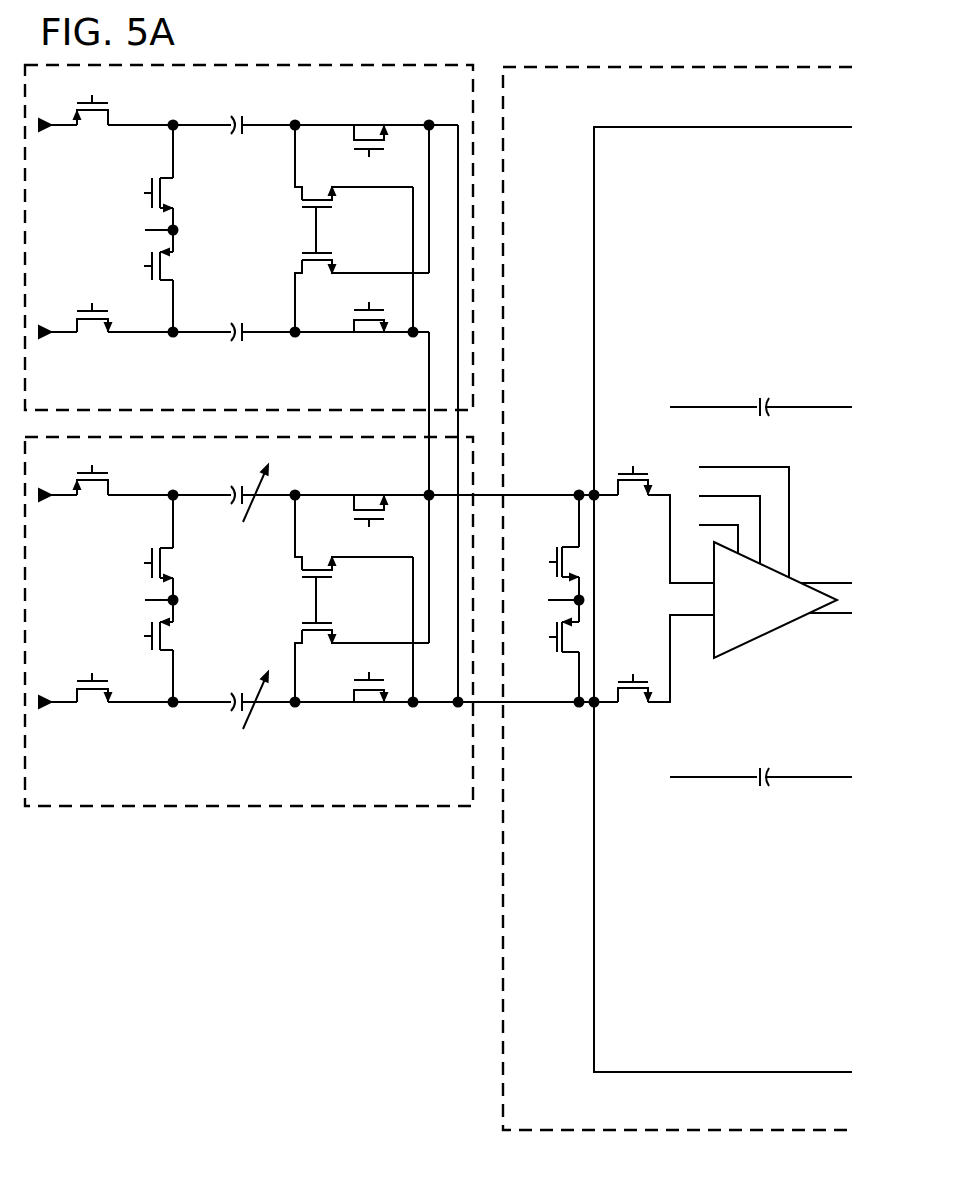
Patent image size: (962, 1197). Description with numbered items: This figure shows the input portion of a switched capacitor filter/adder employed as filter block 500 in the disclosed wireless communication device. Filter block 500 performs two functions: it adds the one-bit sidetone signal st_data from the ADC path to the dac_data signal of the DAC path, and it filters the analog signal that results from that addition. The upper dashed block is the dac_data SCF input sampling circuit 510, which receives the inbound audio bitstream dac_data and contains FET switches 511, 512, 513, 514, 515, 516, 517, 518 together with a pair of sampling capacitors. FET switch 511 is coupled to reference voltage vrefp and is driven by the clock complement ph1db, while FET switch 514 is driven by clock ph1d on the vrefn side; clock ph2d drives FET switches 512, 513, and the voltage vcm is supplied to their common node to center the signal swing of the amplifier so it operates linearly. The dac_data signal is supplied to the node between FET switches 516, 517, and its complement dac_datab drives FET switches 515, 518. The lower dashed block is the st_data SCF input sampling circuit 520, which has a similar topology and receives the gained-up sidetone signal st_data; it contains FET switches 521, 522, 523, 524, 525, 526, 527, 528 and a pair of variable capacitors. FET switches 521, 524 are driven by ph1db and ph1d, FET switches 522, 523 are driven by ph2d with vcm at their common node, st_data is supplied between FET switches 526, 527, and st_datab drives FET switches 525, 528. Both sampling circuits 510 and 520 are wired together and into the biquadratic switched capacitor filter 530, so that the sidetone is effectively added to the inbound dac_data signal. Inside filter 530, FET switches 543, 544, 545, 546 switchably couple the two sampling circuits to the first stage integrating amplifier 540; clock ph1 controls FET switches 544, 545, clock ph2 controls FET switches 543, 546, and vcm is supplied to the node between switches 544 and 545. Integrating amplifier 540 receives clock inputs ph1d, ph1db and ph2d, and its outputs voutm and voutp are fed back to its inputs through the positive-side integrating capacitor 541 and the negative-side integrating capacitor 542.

The filter block 500 is at (438, 575).
The dac_data SCF input sampling circuit 510 is at (353, 65).
The FET switch 511 is at (100, 113).
The FET switch 512 is at (167, 186).
The FET switch 513 is at (167, 264).
The FET switch 514 is at (96, 324).
The FET switch 515 is at (364, 138).
The FET switch 516 is at (300, 196).
The FET switch 517 is at (300, 255).
The FET switch 518 is at (363, 323).
The st_data SCF input sampling circuit 520 is at (340, 806).
The FET switch 521 is at (100, 483).
The FET switch 522 is at (167, 556).
The FET switch 523 is at (167, 634).
The FET switch 524 is at (96, 694).
The FET switch 525 is at (364, 508).
The FET switch 526 is at (300, 566).
The FET switch 527 is at (300, 625).
The FET switch 528 is at (363, 693).
The biquadratic switched capacitor filter 530 is at (557, 67).
The first stage integrating amplifier 540 is at (795, 576).
The integrating capacitor cmfbP1 541 is at (772, 412).
The integrating capacitor cmfbN1 542 is at (772, 782).
The FET switch 543 is at (632, 485).
The FET switch 544 is at (566, 553).
The FET switch 545 is at (567, 631).
The FET switch 546 is at (628, 690).